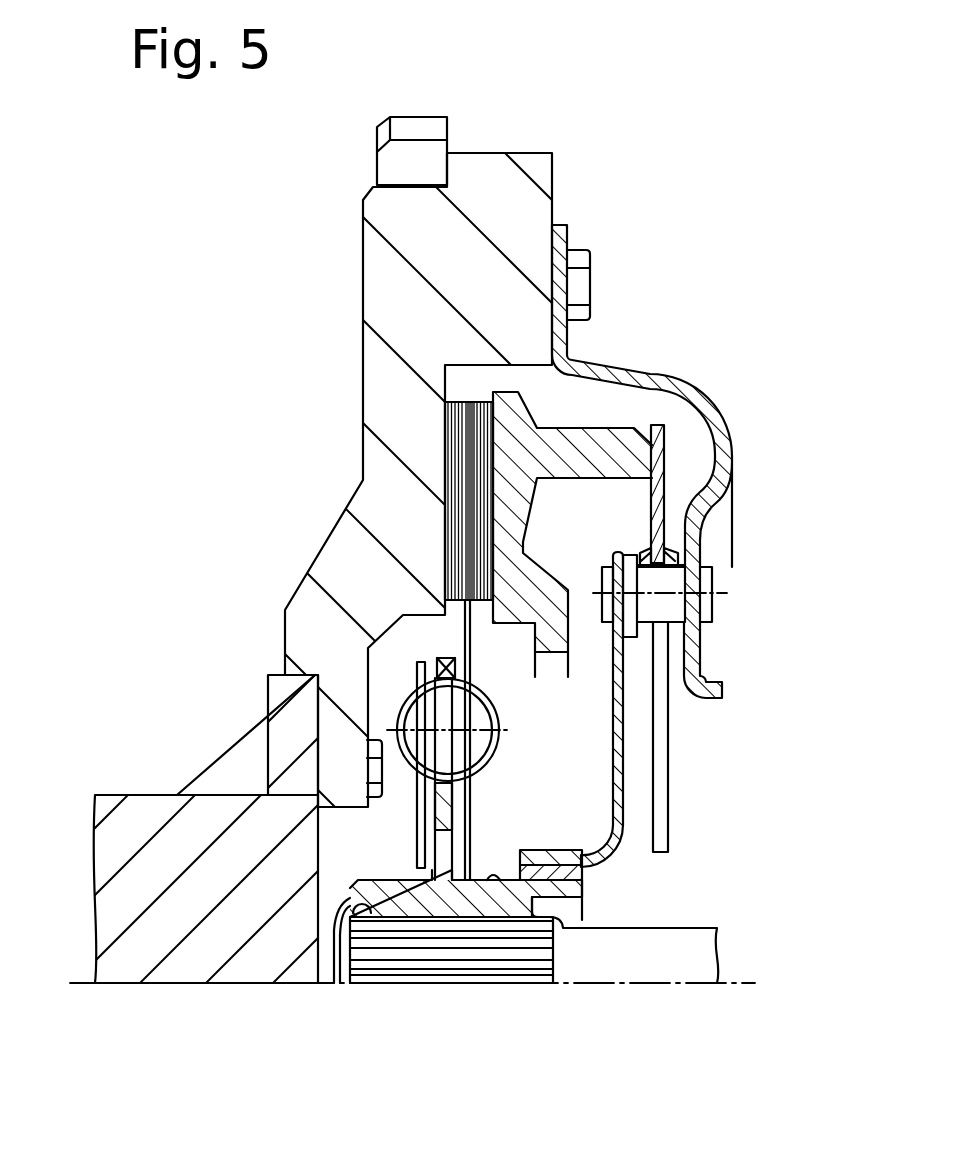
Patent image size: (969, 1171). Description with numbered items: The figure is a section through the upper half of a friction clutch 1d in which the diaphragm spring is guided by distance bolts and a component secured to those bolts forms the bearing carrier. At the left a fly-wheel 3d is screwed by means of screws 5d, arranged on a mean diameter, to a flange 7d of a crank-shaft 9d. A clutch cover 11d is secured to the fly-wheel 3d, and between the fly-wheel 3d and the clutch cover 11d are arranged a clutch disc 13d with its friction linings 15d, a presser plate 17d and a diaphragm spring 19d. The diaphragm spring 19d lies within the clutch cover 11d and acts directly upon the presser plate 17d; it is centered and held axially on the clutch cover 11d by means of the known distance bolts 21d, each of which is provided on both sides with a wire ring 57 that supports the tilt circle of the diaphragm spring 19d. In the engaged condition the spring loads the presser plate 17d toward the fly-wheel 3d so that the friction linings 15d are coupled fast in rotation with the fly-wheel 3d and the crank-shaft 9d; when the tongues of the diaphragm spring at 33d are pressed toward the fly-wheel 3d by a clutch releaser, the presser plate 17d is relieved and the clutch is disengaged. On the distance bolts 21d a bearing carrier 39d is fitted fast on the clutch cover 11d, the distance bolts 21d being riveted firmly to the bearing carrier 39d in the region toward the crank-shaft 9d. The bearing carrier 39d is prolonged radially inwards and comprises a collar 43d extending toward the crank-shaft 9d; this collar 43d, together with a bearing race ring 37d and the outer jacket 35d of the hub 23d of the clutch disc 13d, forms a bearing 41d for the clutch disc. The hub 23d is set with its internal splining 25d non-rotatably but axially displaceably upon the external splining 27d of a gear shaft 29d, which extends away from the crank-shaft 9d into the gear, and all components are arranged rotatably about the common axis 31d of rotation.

The friction clutch 1d is at (652, 202).
The fly-wheel 3d is at (403, 305).
The screw 5d is at (367, 767).
The flange 7d is at (285, 715).
The crank-shaft 9d is at (140, 865).
The clutch cover 11d is at (703, 413).
The clutch disc 13d is at (430, 640).
The friction linings 15d is at (447, 472).
The presser plate 17d is at (560, 445).
The diaphragm spring 19d is at (668, 478).
The distance bolts 21d is at (677, 585).
The wire ring 57 is at (673, 555).
The tongues of the diaphragm spring 33d is at (661, 721).
The bearing carrier 39d is at (614, 795).
The collar 43d is at (602, 852).
The bearing race ring 37d is at (583, 870).
The bearing 41d is at (593, 898).
The hub 23d is at (483, 903).
The outer jacket of the hub 35d is at (490, 877).
The internal splining 25d is at (334, 945).
The external splining 27d is at (412, 952).
The gear shaft 29d is at (627, 953).
The axis of rotation 31d is at (742, 990).